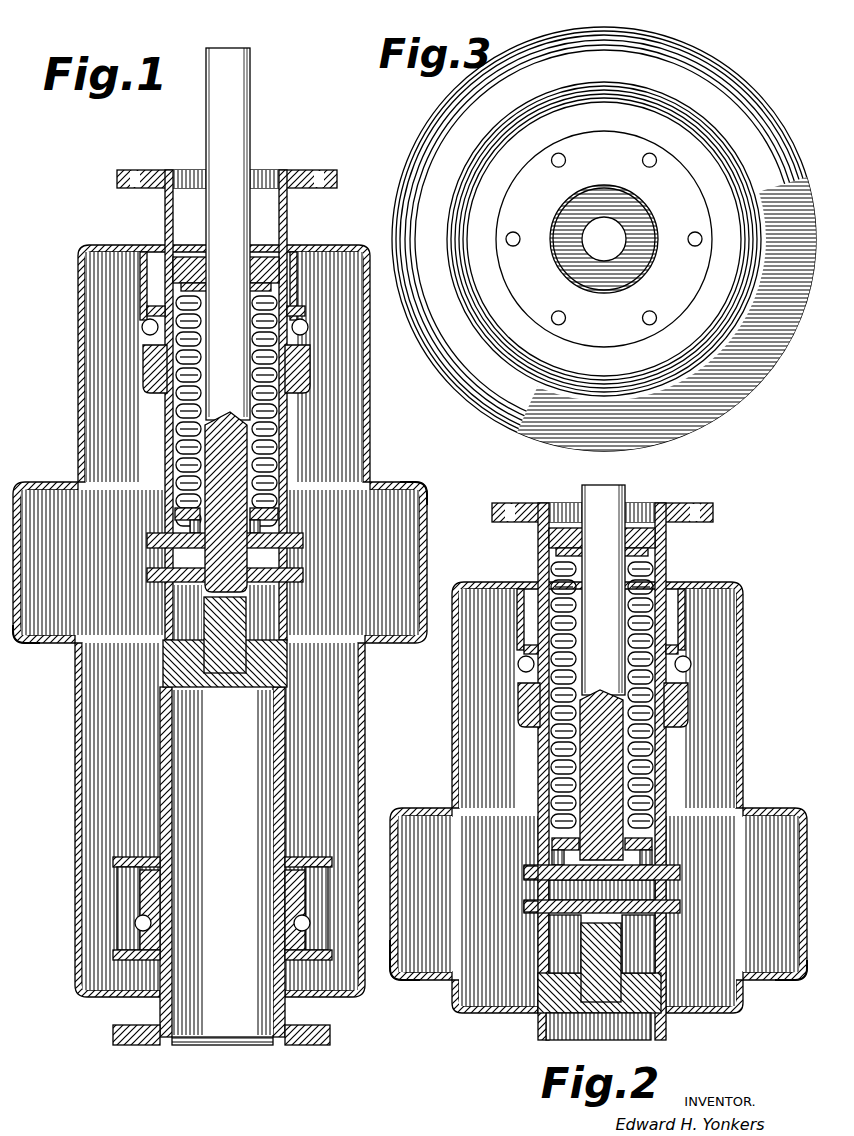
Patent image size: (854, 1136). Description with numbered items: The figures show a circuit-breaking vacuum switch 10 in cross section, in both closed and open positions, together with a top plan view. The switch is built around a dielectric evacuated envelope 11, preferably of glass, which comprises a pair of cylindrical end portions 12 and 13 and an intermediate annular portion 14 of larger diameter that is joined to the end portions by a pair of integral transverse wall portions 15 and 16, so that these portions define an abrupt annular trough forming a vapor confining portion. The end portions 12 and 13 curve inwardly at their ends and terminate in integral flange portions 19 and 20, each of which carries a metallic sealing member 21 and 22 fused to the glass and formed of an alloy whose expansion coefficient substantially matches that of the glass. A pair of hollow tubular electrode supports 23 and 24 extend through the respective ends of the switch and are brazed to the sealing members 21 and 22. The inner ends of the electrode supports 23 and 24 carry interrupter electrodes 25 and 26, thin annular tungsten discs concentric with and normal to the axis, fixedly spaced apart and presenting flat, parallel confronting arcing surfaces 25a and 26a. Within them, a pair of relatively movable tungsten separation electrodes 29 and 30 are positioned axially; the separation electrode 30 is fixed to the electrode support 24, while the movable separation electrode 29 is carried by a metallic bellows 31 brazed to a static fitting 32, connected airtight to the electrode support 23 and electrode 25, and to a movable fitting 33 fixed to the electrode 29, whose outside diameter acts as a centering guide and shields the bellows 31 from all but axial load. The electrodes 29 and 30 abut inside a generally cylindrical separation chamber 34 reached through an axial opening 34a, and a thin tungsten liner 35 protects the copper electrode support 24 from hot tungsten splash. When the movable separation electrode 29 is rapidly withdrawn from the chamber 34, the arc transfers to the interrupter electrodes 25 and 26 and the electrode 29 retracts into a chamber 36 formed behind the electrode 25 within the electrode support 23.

In FIG. 1, the circuit-breaking vacuum switch 10 is at (65, 216).
In FIG. 2, the circuit-breaking vacuum switch 10 is at (706, 1047).
In FIG. 1, the dielectric evacuated envelope 11 is at (72, 392).
In FIG. 2, the dielectric evacuated envelope 11 is at (752, 620).
In FIG. 3, the dielectric evacuated envelope 11 is at (748, 75).
In FIG. 1, the cylindrical end portion 12 is at (79, 274).
In FIG. 2, the cylindrical end portion 12 is at (743, 668).
In FIG. 3, the cylindrical end portion 12 is at (630, 83).
In FIG. 1, the cylindrical end portion 13 is at (75, 793).
In FIG. 2, the cylindrical end portion 13 is at (744, 1010).
In FIG. 1, the intermediate annular portion 14 is at (428, 490).
In FIG. 2, the intermediate annular portion 14 is at (392, 955).
In FIG. 3, the intermediate annular portion 14 is at (763, 108).
In FIG. 1, the transverse wall portion 15 is at (48, 482).
In FIG. 2, the transverse wall portion 15 is at (780, 813).
In FIG. 3, the transverse wall portion 15 is at (754, 375).
In FIG. 1, the transverse wall portion 16 is at (45, 645).
In FIG. 2, the transverse wall portion 16 is at (762, 985).
In FIG. 1, the flange portion 19 is at (310, 292).
In FIG. 2, the flange portion 19 is at (690, 622).
In FIG. 1, the flange portion 20 is at (313, 963).
In FIG. 1, the metallic sealing member 21 is at (143, 360).
In FIG. 2, the metallic sealing member 21 is at (688, 706).
In FIG. 1, the metallic sealing member 22 is at (290, 858).
In FIG. 1, the electrode support 23 is at (290, 415).
In FIG. 2, the electrode support 23 is at (666, 748).
In FIG. 1, the electrode support 24 is at (160, 736).
In FIG. 1, the interrupter electrode 25 is at (303, 541).
In FIG. 2, the interrupter electrode 25 is at (672, 872).
In FIG. 2, the arcing surface 25a is at (526, 878).
In FIG. 1, the interrupter electrode 26 is at (303, 575).
In FIG. 2, the interrupter electrode 26 is at (676, 908).
In FIG. 2, the arcing surface 26a is at (530, 904).
In FIG. 1, the movable separation electrode 29 is at (205, 495).
In FIG. 2, the movable separation electrode 29 is at (613, 777).
In FIG. 3, the movable separation electrode 29 is at (606, 218).
In FIG. 1, the separation electrode 30 is at (237, 612).
In FIG. 2, the separation electrode 30 is at (611, 940).
In FIG. 1, the metallic bellows 31 is at (278, 432).
In FIG. 2, the metallic bellows 31 is at (650, 580).
In FIG. 1, the static fitting 32 is at (266, 513).
In FIG. 2, the static fitting 32 is at (652, 845).
In FIG. 1, the movable fitting 33 is at (190, 262).
In FIG. 2, the movable fitting 33 is at (633, 532).
In FIG. 3, the movable fitting 33 is at (657, 221).
In FIG. 1, the separation chamber 34 is at (263, 628).
In FIG. 2, the separation chamber 34 is at (567, 955).
In FIG. 2, the axial opening 34a is at (614, 898).
In FIG. 2, the cylindrical liner 35 is at (653, 954).
In FIG. 1, the chamber 36 is at (260, 530).
In FIG. 2, the chamber 36 is at (655, 858).